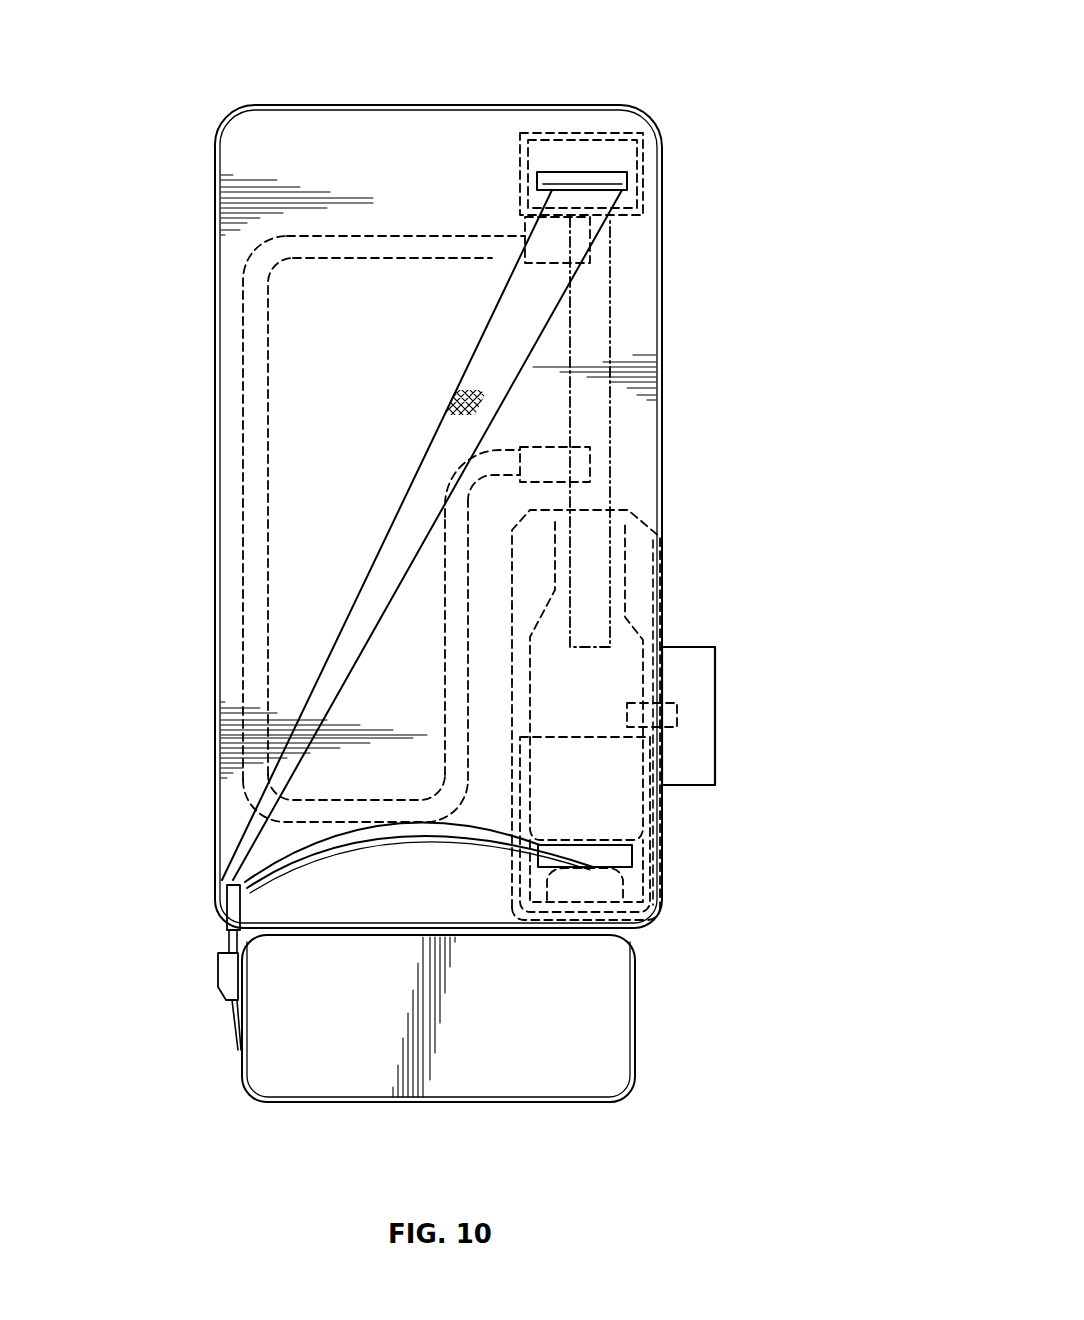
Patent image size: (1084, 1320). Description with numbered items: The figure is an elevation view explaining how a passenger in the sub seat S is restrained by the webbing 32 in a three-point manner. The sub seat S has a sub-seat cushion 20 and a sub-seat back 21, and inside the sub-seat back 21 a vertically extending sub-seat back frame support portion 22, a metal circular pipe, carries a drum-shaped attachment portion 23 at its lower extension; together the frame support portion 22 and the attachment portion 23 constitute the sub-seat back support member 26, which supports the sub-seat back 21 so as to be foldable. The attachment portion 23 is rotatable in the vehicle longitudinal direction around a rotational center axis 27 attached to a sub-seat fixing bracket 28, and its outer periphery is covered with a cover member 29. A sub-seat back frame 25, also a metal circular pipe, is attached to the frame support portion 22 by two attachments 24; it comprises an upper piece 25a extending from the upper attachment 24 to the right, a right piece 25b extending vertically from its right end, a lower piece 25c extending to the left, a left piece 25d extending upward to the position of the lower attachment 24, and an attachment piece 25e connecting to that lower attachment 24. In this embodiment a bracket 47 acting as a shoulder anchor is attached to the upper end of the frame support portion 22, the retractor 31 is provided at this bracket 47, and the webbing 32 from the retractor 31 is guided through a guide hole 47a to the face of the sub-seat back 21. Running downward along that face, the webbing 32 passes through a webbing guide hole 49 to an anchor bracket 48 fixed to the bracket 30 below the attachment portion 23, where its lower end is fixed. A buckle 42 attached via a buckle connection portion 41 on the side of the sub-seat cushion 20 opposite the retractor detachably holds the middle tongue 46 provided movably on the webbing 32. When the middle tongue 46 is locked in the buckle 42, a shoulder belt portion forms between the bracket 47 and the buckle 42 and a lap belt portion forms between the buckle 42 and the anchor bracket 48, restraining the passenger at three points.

The sub seat S is at (378, 103).
The sub-seat cushion 20 is at (637, 1015).
The sub-seat back 21 is at (662, 292).
The sub-seat back frame support portion 22 is at (610, 462).
The attachment portion 23 is at (627, 563).
The attachment 24 is at (540, 265).
The sub-seat back frame 25 is at (315, 529).
The upper piece 25a is at (362, 258).
The right piece 25b is at (243, 525).
The lower piece 25c is at (360, 800).
The left piece 25d is at (443, 688).
The attachment piece 25e is at (470, 452).
The sub-seat back support member 26 is at (708, 559).
The rotational center axis 27 is at (627, 713).
The sub-seat fixing bracket 28 is at (708, 676).
The cover member 29 is at (662, 598).
The bracket 30 is at (543, 915).
The retractor 31 is at (650, 172).
The webbing 32 is at (410, 505).
The buckle connection portion 41 is at (237, 1030).
The buckle 42 is at (218, 975).
The middle tongue 46 is at (235, 905).
The bracket 47 is at (536, 130).
The guide hole 47a is at (592, 172).
The anchor bracket 48 is at (627, 890).
The webbing guide hole 49 is at (585, 845).